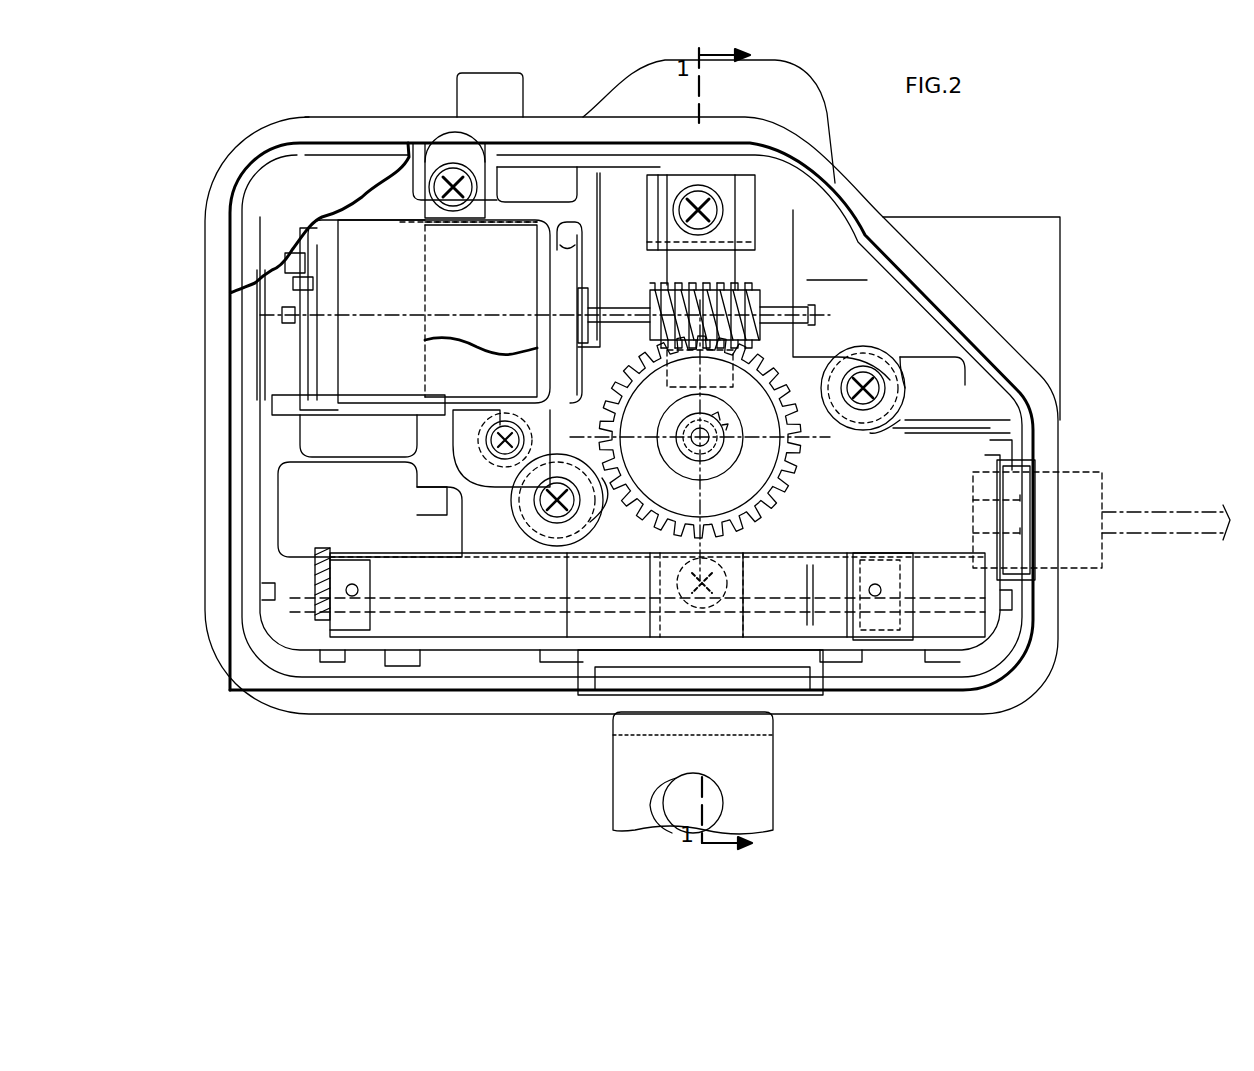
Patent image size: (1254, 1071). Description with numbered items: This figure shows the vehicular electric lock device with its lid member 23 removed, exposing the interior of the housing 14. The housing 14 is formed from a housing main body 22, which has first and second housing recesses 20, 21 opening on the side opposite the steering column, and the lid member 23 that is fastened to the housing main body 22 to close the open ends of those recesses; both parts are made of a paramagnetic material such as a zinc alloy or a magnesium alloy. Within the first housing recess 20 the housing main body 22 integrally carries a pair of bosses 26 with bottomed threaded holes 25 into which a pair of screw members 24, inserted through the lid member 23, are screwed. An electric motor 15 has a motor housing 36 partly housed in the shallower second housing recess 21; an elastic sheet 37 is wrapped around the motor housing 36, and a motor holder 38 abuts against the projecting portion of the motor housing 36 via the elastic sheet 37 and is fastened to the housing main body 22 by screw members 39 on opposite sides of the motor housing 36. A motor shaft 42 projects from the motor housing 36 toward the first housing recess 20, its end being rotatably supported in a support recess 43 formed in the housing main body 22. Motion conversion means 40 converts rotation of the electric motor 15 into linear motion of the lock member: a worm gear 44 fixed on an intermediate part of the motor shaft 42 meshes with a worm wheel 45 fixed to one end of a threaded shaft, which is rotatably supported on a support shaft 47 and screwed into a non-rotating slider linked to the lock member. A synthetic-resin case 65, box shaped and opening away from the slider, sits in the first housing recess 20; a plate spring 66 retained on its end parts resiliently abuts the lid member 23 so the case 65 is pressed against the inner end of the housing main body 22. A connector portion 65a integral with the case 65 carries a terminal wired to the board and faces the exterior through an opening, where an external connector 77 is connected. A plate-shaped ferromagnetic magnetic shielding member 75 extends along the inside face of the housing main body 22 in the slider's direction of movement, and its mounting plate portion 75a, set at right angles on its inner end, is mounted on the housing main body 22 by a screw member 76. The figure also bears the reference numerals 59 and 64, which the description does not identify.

The housing 14 is at (322, 722).
The electric motor 15 is at (315, 228).
The first housing recess 20 is at (955, 375).
The second housing recess 21 is at (580, 247).
The housing main body 22 is at (440, 716).
The lid member 23 is at (343, 170).
The screw members 24 is at (892, 352).
The threaded holes 25 is at (870, 412).
The bosses 26 is at (906, 404).
The motor housing 36 is at (323, 302).
The elastic sheet 37 is at (395, 243).
The motor holder 38 is at (445, 297).
The screw members 39 is at (455, 170).
The motion conversion means 40 is at (632, 336).
The motor shaft 42 is at (624, 300).
The support recess 43 is at (814, 314).
The worm gear 44 is at (700, 300).
The worm wheel 45 is at (792, 490).
The support shaft 47 is at (690, 434).
The screw 59 is at (695, 188).
The bearing holder 64 is at (722, 272).
The case 65 is at (302, 491).
The connector portion 65a is at (1020, 455).
The plate spring 66 is at (777, 628).
The magnetic shielding member 75 is at (637, 680).
The mounting plate portion 75a is at (747, 585).
The screw member 76 is at (676, 584).
The external connector 77 is at (1088, 572).